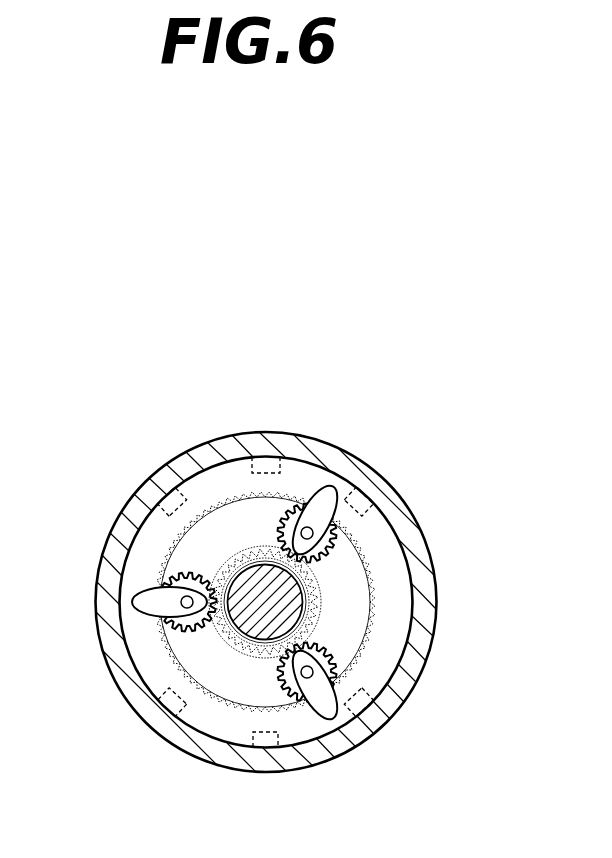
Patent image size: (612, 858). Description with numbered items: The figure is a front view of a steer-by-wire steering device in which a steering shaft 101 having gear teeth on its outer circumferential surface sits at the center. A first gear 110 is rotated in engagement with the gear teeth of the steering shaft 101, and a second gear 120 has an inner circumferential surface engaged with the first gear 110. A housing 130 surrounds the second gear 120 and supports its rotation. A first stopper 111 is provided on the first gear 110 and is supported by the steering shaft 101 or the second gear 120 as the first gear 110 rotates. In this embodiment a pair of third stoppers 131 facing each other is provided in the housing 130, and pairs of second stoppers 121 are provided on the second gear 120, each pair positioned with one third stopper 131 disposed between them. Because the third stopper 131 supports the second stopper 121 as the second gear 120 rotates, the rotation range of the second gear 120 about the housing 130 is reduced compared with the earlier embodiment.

The steering shaft 101 is at (292, 603).
The first gear 110 is at (185, 575).
The first stopper 111 is at (131, 601).
The second gear 120 is at (393, 564).
The second stopper 121 is at (170, 497).
The housing 130 is at (400, 520).
The third stopper 131 is at (263, 457).